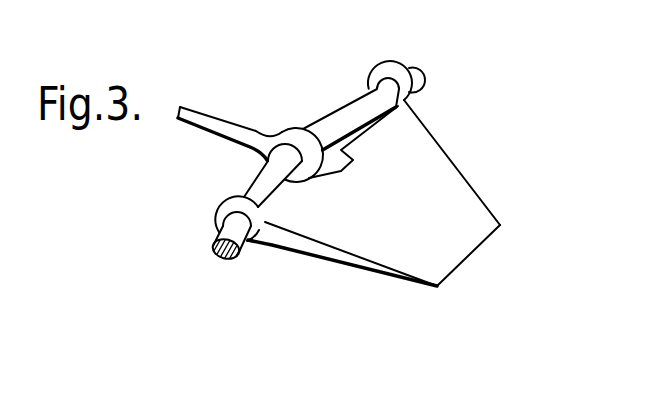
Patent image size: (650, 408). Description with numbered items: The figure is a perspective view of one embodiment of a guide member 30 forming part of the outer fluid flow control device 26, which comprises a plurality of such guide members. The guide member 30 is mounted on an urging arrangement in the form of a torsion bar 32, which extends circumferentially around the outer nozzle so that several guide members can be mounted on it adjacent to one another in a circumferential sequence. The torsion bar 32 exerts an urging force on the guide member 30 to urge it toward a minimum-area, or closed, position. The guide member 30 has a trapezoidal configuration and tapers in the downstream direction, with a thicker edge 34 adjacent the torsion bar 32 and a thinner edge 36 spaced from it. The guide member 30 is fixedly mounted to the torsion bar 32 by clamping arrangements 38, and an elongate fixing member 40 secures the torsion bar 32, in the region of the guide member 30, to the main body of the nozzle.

The outer fluid flow control device 26 is at (357, 306).
The guide member 30 is at (466, 200).
The torsion bar 32 is at (338, 112).
The thicker edge 34 is at (271, 249).
The thinner edge 36 is at (438, 287).
The clamping arrangement 38 is at (390, 53).
The elongate fixing member 40 is at (237, 112).